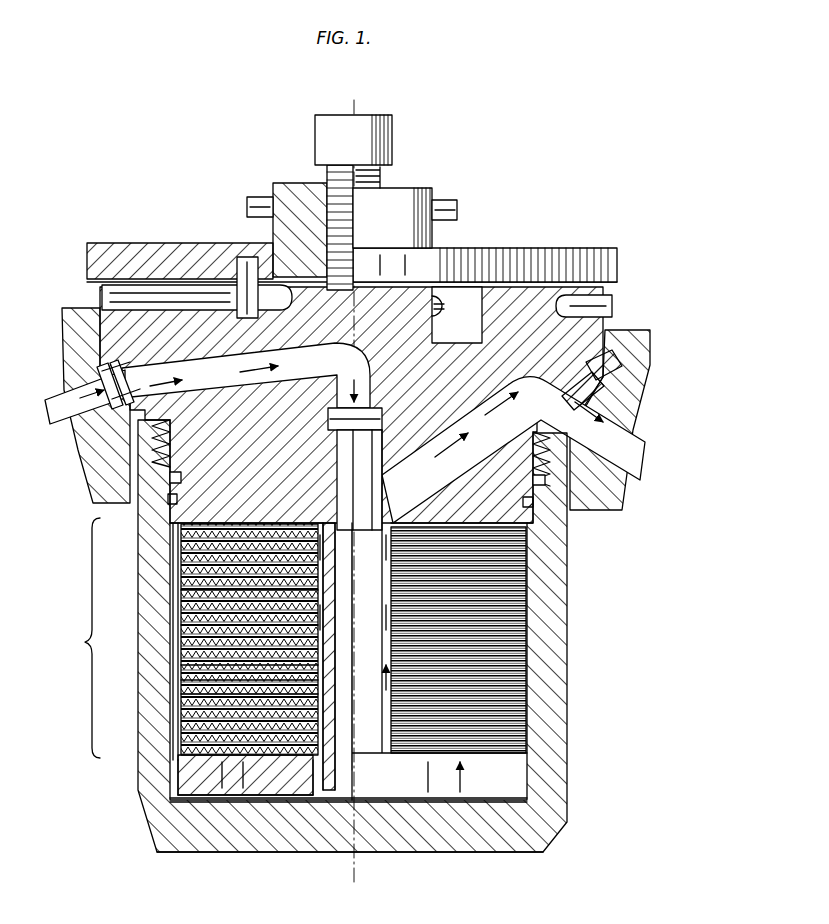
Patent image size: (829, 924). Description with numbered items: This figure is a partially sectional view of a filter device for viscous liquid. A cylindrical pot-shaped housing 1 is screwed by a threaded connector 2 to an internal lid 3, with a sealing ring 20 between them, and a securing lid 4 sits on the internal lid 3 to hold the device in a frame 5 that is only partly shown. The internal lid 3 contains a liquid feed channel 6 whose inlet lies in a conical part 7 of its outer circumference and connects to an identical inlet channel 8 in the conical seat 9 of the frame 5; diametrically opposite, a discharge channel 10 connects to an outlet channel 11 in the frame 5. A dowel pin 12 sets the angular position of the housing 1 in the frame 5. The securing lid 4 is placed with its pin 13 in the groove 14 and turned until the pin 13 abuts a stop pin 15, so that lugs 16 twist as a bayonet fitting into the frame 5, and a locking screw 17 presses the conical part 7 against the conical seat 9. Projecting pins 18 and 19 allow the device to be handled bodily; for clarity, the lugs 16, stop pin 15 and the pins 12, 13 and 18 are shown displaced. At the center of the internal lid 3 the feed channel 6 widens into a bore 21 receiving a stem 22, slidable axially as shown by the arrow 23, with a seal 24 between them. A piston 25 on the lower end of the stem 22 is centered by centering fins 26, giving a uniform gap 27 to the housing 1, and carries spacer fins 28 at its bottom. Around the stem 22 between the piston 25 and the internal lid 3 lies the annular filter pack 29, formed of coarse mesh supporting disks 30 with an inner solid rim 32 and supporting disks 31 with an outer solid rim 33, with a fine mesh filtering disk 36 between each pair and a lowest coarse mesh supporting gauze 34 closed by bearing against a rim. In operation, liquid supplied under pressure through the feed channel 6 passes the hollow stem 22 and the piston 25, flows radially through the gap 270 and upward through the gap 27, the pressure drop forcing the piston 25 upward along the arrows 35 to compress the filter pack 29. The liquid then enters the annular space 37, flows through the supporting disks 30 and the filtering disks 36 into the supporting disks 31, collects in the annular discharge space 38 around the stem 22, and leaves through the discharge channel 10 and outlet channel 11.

The housing 1 is at (567, 672).
The threaded connector 2 is at (560, 462).
The internal lid 3 is at (595, 350).
The lid 4 is at (560, 262).
The frame 5 is at (642, 358).
The liquid feed channel 6 is at (160, 372).
The conical part 7 is at (100, 384).
The inlet channel 8 is at (96, 403).
The conical seat 9 is at (100, 441).
The discharge channel 10 is at (488, 418).
The outlet channel 11 is at (620, 415).
The dowel pin 12 is at (613, 303).
The pin 13 is at (244, 262).
The groove 14 is at (465, 295).
The stop pin 15 is at (200, 292).
The lugs 16 is at (113, 243).
The locking screw 17 is at (392, 143).
The projecting pin 18 is at (263, 203).
The projecting pin 19 is at (447, 205).
The sealing ring 20 is at (172, 497).
The bore 21 is at (383, 418).
The stem 22 is at (320, 500).
The arrow 23 is at (320, 607).
The seal 24 is at (318, 453).
The piston 25 is at (268, 780).
The centering fins 26 is at (185, 798).
The gap 27 is at (178, 775).
The spacer fins 28 is at (190, 802).
The filter pack 29 is at (75, 638).
The supporting disks 30 is at (180, 570).
The supporting disks 31 is at (190, 592).
The solid rim 32 is at (320, 663).
The solid rim 33 is at (180, 623).
The coarse mesh supporting gauze 34 is at (176, 752).
The arrows 35 is at (243, 790).
The filtering disk 36 is at (180, 694).
The annular space 37 is at (180, 666).
The annular discharge space 38 is at (355, 720).
The gap 270 is at (250, 802).